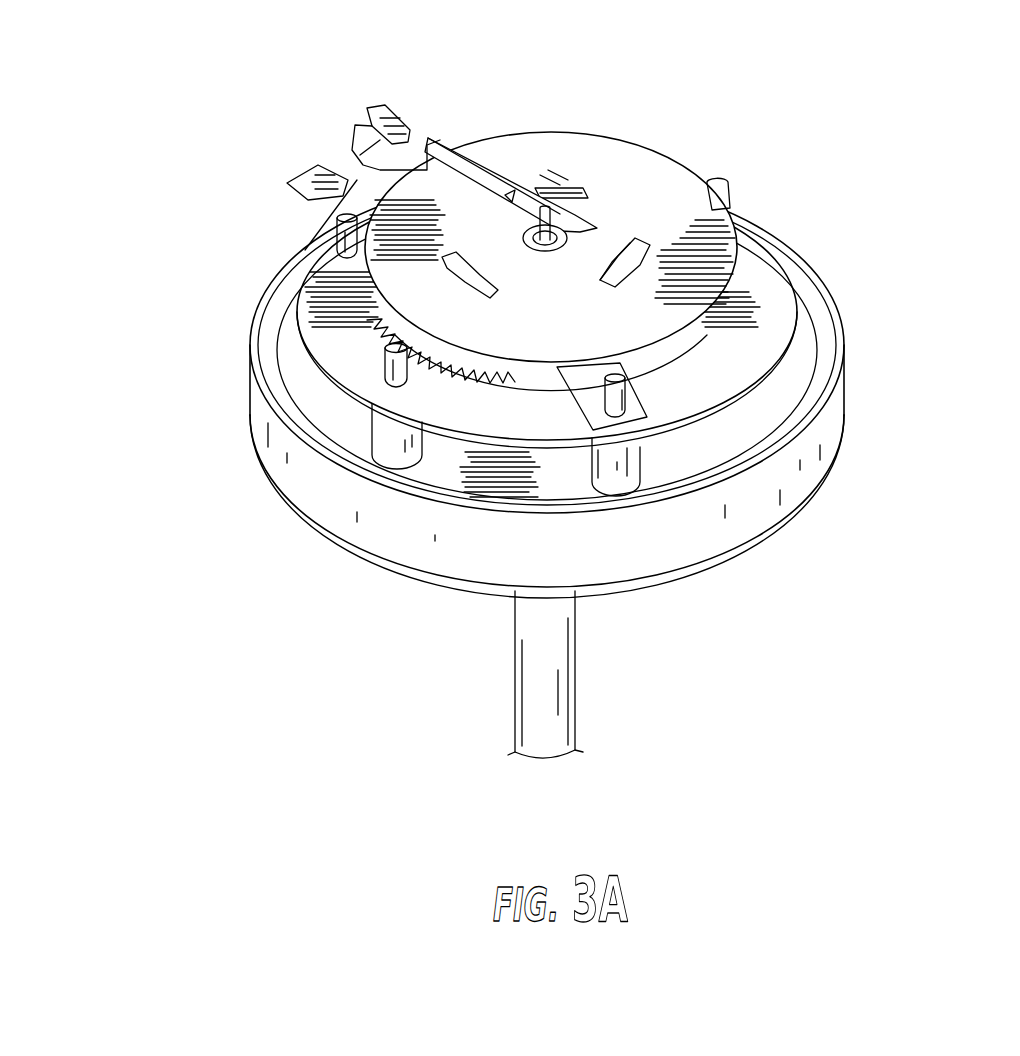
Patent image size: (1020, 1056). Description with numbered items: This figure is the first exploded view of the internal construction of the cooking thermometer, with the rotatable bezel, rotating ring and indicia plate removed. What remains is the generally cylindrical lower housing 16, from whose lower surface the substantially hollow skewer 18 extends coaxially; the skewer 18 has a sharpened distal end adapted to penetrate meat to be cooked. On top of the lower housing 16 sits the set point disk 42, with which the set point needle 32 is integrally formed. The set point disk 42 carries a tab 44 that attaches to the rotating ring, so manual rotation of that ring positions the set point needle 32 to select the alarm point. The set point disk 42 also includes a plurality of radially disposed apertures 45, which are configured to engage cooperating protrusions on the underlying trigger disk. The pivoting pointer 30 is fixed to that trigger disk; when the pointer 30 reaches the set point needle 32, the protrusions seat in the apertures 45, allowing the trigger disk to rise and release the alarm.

The lower housing 16 is at (835, 443).
The skewer 18 is at (547, 677).
The pointer 30 is at (480, 162).
The set point needle 32 is at (373, 107).
The set point disk 42 is at (647, 157).
The tab 44 is at (305, 178).
The apertures 45 is at (435, 262).